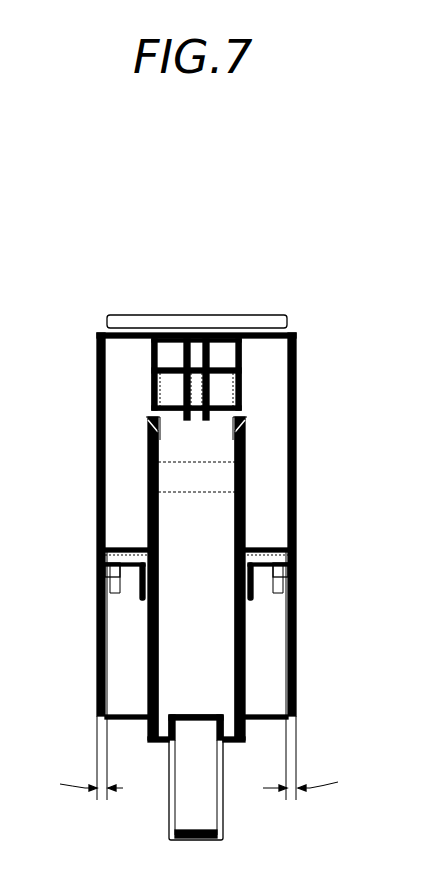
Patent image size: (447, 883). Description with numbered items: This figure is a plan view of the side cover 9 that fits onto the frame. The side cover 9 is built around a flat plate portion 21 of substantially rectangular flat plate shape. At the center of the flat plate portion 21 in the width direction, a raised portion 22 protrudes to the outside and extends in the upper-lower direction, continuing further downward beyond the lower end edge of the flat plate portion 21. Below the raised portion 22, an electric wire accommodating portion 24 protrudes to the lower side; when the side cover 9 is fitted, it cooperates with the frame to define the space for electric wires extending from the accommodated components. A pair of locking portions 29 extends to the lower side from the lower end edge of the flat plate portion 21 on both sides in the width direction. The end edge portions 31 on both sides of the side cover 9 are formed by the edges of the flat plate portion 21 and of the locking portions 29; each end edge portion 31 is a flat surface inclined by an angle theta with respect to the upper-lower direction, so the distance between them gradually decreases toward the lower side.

The side cover 9 is at (249, 283).
The end edge portions 31 is at (97, 407).
The flat plate portion 21 is at (238, 463).
The raised portion 22 is at (213, 523).
The locking portions 29 is at (127, 637).
The electric wire accommodating portion 24 is at (215, 822).